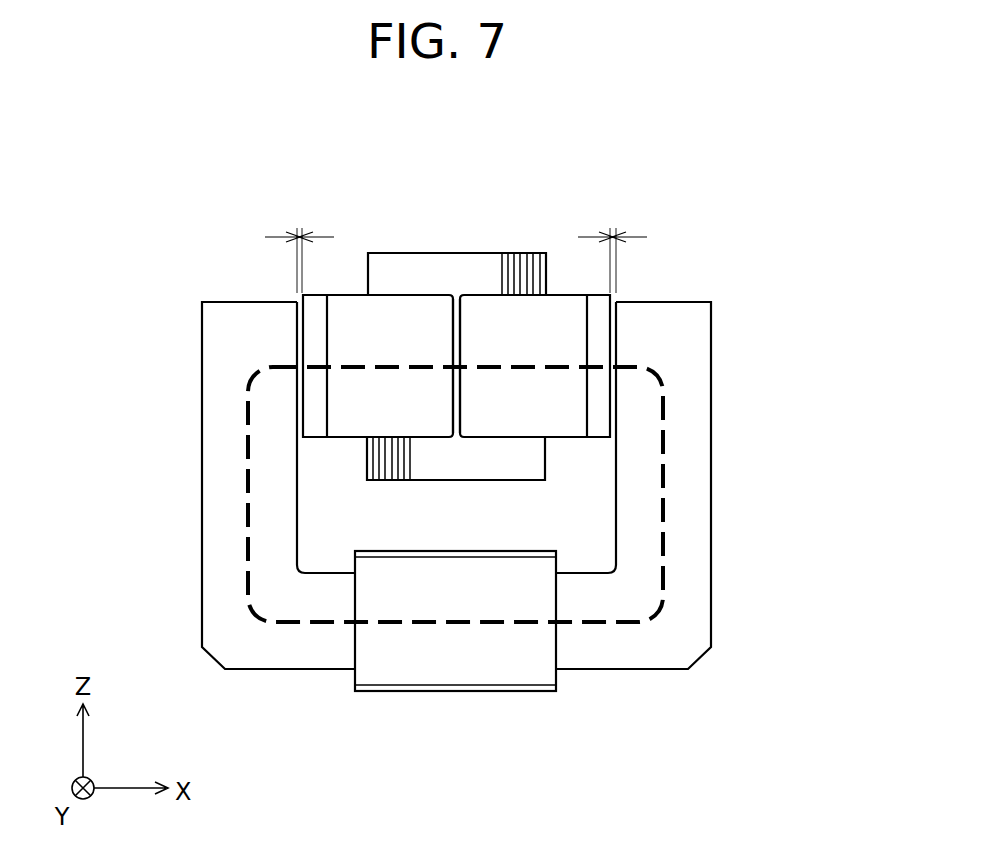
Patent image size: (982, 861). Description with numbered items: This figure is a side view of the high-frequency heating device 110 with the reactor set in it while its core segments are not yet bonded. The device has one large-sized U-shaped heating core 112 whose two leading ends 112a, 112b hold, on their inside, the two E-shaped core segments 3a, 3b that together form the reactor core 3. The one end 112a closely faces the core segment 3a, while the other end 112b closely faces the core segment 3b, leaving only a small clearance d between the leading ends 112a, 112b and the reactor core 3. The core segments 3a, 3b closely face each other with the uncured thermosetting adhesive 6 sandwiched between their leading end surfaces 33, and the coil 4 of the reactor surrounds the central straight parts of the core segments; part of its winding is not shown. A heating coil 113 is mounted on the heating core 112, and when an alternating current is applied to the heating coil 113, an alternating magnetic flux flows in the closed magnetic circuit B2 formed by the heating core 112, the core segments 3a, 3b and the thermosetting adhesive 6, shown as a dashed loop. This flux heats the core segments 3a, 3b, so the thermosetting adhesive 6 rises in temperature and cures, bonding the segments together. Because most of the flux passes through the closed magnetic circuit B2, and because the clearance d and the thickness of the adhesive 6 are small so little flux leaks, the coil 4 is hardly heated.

The reactor core 3 is at (456, 300).
The core segment 3a is at (343, 307).
The core segment 3b is at (568, 307).
The coil 4 is at (443, 263).
The thermosetting adhesive 6 is at (457, 333).
The leading end surface 33 is at (452, 333).
The clearance d is at (456, 244).
The high-frequency heating device 110 is at (459, 550).
The heating core 112 is at (459, 526).
The leading end of heating core 112a is at (213, 337).
The leading end of heating core 112b is at (698, 338).
The heating coil 113 is at (455, 651).
The closed magnetic circuit B2 is at (680, 493).